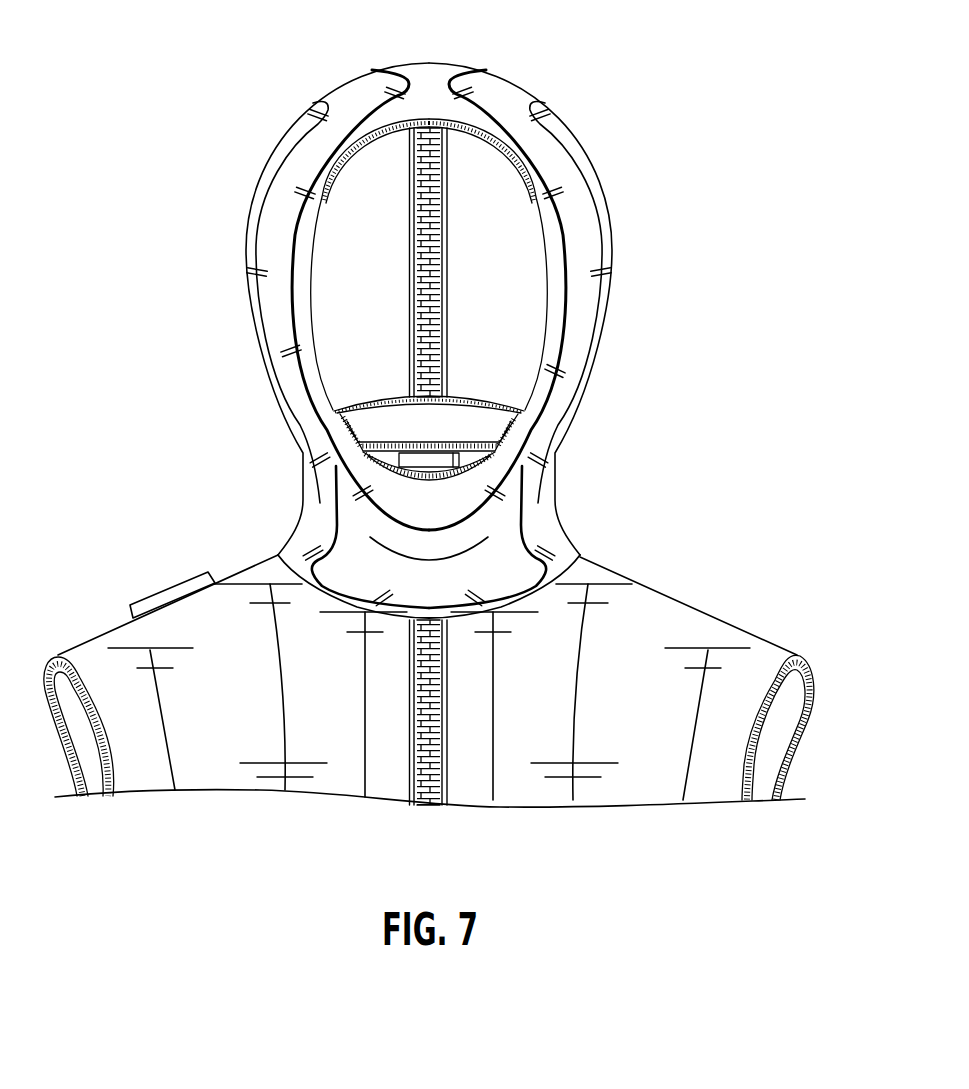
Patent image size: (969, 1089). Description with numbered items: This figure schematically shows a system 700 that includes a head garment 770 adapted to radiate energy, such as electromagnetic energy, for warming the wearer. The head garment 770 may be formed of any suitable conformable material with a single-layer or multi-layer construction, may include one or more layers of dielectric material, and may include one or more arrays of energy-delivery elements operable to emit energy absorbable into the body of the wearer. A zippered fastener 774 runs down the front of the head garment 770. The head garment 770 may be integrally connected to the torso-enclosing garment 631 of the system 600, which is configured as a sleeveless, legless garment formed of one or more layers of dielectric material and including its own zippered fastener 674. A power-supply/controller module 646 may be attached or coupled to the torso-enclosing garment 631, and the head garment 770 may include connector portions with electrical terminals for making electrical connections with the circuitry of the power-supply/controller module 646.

The system 700 is at (684, 44).
The head garment 770 is at (226, 231).
The zippered fastener 774 is at (403, 313).
The system 600 is at (636, 560).
The torso-enclosing garment 631 is at (671, 614).
The power-supply/controller module 646 is at (170, 593).
The zippered fastener 674 is at (431, 813).